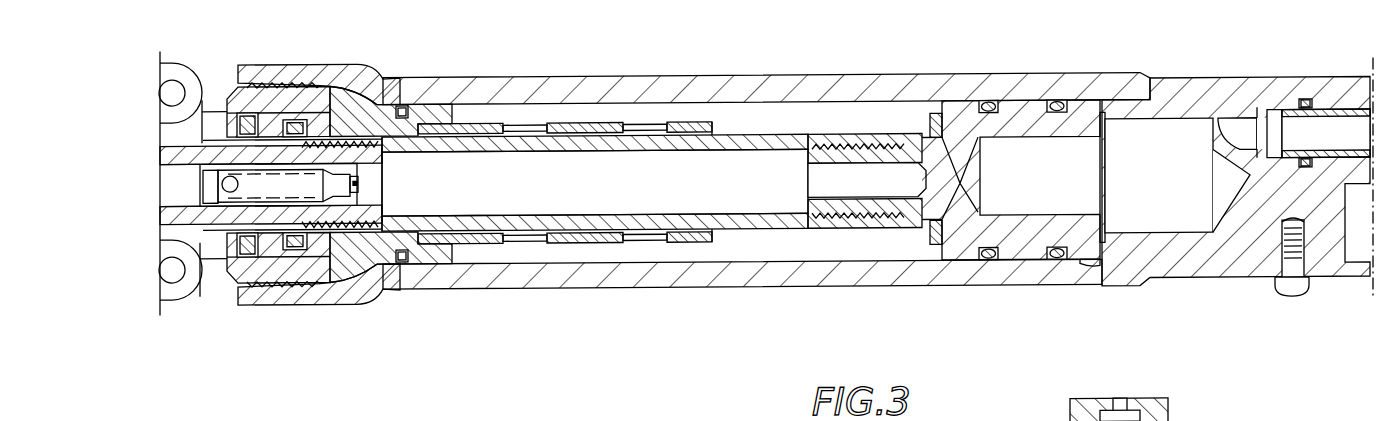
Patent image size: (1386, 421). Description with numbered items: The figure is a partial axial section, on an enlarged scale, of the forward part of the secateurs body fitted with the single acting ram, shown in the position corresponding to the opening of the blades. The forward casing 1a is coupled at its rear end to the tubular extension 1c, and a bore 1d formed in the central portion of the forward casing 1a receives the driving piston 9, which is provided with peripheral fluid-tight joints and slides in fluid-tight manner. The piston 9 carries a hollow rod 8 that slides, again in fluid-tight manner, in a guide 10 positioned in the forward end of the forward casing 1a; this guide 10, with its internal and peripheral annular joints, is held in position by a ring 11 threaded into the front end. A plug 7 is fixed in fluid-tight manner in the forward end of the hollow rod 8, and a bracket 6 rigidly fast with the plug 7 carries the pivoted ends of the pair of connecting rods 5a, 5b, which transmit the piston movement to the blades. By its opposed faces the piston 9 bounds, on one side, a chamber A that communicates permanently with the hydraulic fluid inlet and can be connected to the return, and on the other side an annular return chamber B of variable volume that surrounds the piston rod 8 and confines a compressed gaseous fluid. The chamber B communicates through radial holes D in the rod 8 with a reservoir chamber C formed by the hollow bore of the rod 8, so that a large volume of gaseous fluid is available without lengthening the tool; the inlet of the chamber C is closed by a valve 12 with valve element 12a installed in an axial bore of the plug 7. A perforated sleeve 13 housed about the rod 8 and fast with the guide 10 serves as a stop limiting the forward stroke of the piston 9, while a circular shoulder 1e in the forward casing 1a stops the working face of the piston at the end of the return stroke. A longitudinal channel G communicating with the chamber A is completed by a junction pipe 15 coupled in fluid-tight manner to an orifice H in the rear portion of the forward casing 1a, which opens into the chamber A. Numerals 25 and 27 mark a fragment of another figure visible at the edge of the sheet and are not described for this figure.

The forward casing 1a is at (427, 280).
The tubular extension 1c is at (1237, 204).
The bore 1d is at (836, 245).
The circular shoulder 1e is at (1100, 248).
The connecting rod 5a is at (185, 78).
The connecting rod 5b is at (178, 288).
The bracket 6 is at (190, 295).
The plug 7 is at (370, 220).
The hollow rod 8 is at (657, 222).
The driving piston 9 is at (963, 243).
The guide 10 is at (353, 254).
The ring 11 is at (260, 282).
The valve 12 is at (393, 88).
The valve element 12a is at (297, 282).
The perforated sleeve 13 is at (598, 237).
The junction pipe 15 is at (1325, 116).
The chamber A is at (1185, 218).
The annular return chamber B is at (704, 255).
The reservoir chamber C is at (560, 187).
The radial holes D is at (758, 142).
The longitudinal channel G is at (1292, 134).
The orifice H is at (1240, 138).
The valve element 25 is at (1193, 420).
The valve body 27 is at (1158, 415).